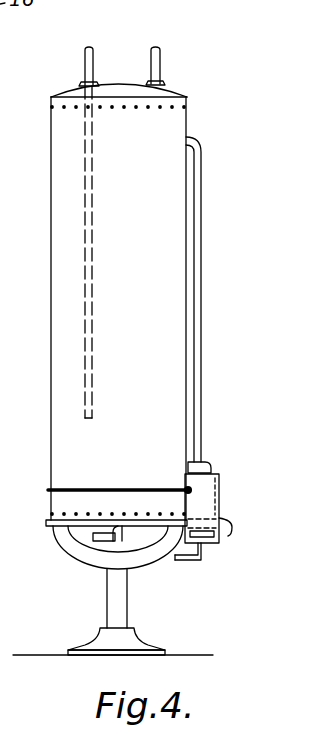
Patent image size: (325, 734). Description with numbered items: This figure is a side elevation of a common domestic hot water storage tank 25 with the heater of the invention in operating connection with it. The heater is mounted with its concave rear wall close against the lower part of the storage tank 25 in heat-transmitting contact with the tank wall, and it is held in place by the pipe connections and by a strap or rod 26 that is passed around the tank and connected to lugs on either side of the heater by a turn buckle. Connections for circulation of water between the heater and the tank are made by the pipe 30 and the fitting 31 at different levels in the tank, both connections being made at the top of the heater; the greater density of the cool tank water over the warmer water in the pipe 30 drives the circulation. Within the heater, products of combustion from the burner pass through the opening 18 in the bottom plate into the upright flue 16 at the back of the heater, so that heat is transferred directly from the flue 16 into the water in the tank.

The upright space or flue 16 is at (0, 82).
The opening 18 is at (0, 191).
The storage tank 25 is at (55, 422).
The strap or rod 26 is at (103, 488).
The pipe 30 is at (200, 372).
The fitting 31 is at (195, 456).